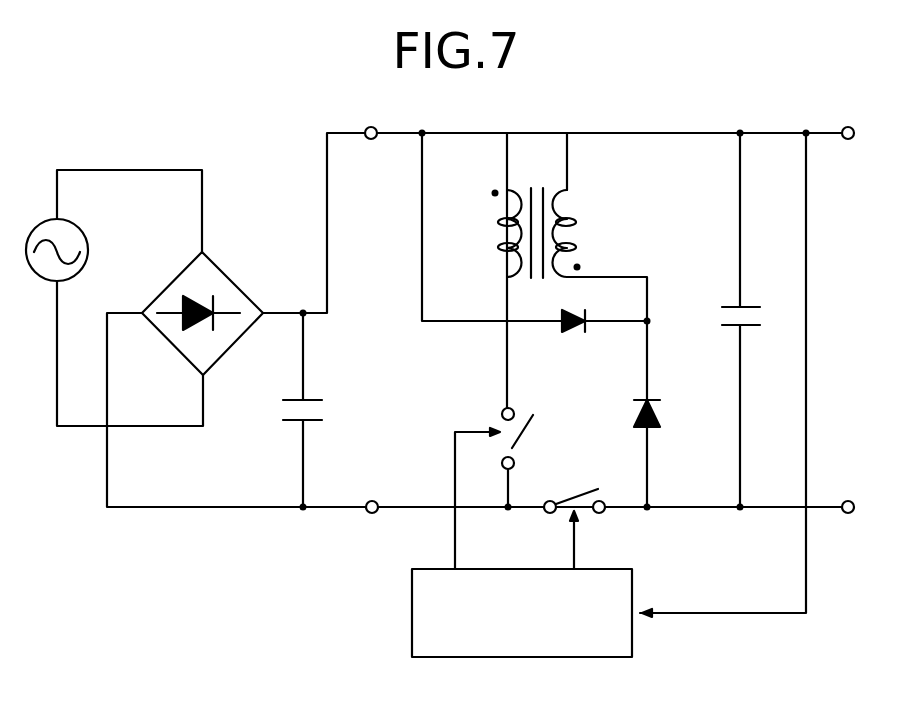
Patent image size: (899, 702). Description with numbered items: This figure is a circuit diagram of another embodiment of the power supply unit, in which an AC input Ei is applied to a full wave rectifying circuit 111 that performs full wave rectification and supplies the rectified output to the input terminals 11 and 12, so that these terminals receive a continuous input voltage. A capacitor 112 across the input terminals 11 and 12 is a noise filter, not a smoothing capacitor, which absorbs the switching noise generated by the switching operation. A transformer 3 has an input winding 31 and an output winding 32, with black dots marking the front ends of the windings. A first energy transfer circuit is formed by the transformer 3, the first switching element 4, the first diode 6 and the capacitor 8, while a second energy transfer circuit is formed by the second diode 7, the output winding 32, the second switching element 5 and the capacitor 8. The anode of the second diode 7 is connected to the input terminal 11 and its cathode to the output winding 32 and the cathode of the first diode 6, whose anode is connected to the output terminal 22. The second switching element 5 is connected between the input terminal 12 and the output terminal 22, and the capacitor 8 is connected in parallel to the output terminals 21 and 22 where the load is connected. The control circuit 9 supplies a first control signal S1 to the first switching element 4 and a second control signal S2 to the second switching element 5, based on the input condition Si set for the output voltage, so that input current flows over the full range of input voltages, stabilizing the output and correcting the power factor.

The AC input Ei is at (89, 253).
The full wave rectifying circuit 111 is at (236, 280).
The capacitor 112 is at (295, 413).
The input terminal 11 is at (372, 127).
The input terminal 12 is at (372, 501).
The output terminal 21 is at (852, 128).
The output terminal 22 is at (853, 502).
The transformer 3 is at (542, 204).
The input winding 31 is at (500, 222).
The output winding 32 is at (570, 222).
The second diode 7 is at (567, 337).
The first diode 6 is at (662, 425).
The capacitor 8 is at (731, 305).
The first switching element 4 is at (518, 443).
The second switching element 5 is at (585, 494).
The control circuit 9 is at (634, 575).
The first control signal S1 is at (455, 556).
The second control signal S2 is at (574, 556).
The input condition Si is at (722, 607).